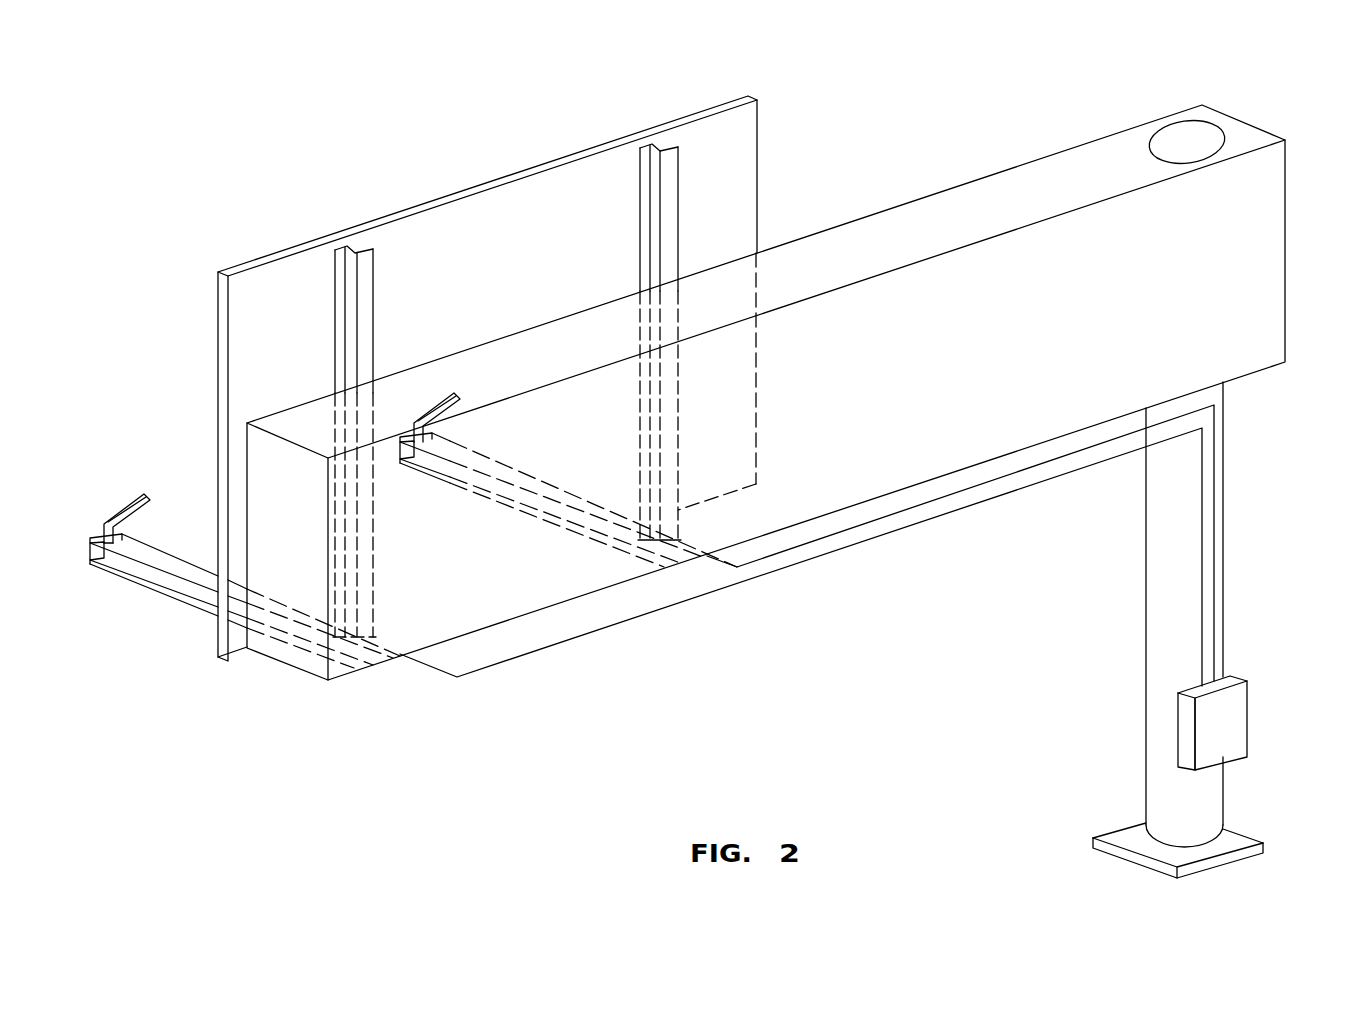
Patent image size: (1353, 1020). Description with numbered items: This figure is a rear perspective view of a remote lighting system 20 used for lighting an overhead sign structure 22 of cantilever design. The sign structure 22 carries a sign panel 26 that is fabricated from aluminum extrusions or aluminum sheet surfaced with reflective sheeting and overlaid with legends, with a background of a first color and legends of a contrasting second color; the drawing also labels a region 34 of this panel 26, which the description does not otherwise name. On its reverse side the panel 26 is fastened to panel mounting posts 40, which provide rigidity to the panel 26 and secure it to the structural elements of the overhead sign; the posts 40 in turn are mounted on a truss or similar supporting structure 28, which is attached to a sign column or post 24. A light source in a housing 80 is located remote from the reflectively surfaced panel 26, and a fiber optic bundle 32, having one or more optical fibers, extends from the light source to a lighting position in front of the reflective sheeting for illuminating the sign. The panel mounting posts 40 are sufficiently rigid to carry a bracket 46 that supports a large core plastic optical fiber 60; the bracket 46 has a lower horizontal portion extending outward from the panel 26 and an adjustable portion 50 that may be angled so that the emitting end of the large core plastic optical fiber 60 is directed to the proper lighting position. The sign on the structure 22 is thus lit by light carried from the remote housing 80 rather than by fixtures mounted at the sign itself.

The remote lighting system 20 is at (882, 598).
The overhead sign structure 22 is at (892, 163).
The sign column or post 24 is at (1170, 583).
The sign panel 26 is at (567, 155).
The truss or supporting structure 28 is at (805, 278).
The fiber optic bundle 32 is at (1202, 525).
The panel face 34 is at (710, 170).
The panel mounting posts 40 is at (360, 330).
The bracket 46 is at (160, 575).
The adjustable portion 50 is at (117, 512).
The large core plastic optical fiber 60 is at (135, 515).
The light source housing 80 is at (1217, 725).